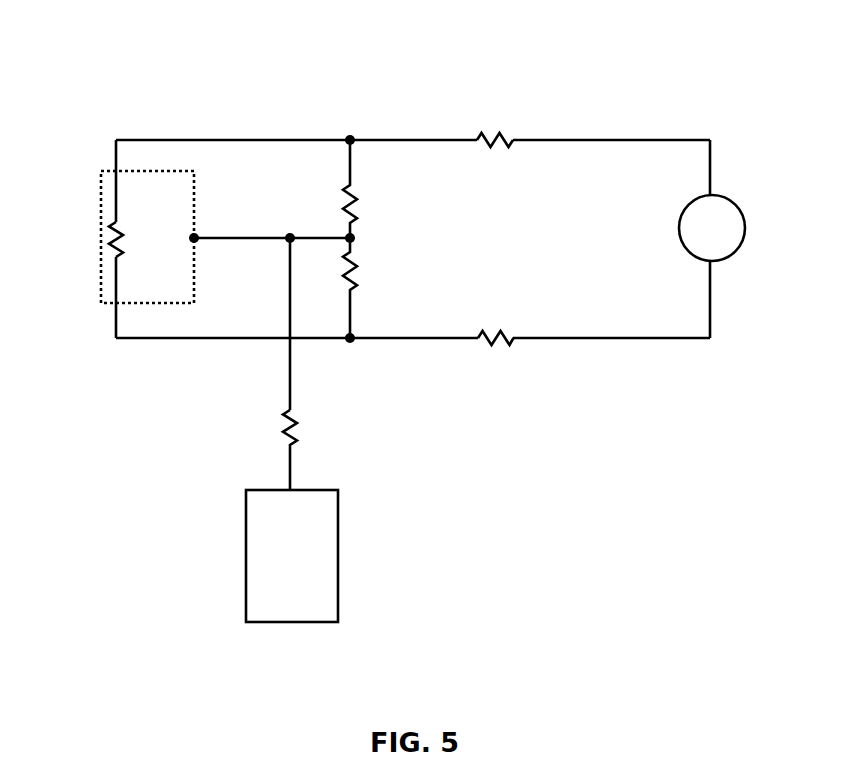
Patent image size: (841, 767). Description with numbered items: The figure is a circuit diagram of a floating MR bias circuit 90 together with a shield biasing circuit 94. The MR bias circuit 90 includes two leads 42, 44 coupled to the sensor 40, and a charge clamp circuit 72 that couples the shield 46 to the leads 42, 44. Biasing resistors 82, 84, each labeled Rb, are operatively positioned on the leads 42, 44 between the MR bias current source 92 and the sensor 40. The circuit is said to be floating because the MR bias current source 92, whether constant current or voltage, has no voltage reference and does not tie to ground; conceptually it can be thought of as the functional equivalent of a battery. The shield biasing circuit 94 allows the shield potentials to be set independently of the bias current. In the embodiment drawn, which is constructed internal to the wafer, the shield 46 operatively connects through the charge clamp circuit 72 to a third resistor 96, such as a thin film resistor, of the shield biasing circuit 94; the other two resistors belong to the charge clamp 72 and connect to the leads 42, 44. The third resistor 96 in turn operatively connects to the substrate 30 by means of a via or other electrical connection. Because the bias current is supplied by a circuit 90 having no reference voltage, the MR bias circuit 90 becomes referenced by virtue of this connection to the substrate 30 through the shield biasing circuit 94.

The floating MR bias circuit 90 is at (100, 90).
The sensor 40 is at (108, 240).
The shield 46 is at (165, 305).
The charge clamp circuit 72 is at (378, 231).
The biasing resistor 82 is at (496, 137).
The biasing resistor 84 is at (497, 335).
The lead 44 is at (627, 138).
The lead 42 is at (385, 340).
The MR bias current source 92 is at (745, 228).
The shield biasing circuit 94 is at (290, 381).
The third resistor 96 is at (306, 419).
The substrate 30 is at (338, 527).